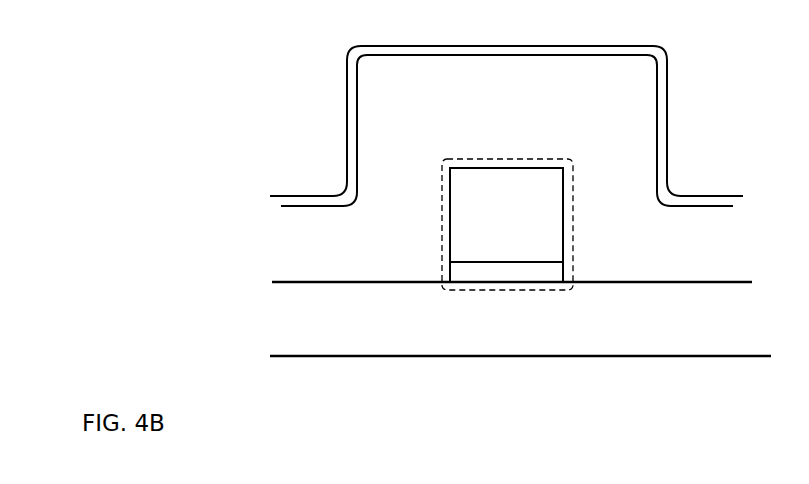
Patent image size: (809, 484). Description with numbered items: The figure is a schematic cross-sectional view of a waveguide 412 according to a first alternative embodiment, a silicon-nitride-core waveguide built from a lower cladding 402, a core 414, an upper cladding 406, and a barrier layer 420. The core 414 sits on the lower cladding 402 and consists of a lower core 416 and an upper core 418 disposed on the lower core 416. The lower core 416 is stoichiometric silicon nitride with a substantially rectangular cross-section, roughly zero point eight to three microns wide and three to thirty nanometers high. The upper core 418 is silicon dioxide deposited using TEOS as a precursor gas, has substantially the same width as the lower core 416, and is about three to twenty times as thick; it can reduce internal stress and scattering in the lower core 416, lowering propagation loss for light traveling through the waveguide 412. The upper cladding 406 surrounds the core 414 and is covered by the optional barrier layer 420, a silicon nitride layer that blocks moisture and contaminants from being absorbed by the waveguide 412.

The lower cladding 402 is at (347, 336).
The upper cladding 406 is at (347, 261).
The waveguide 412 is at (272, 91).
The core 414 is at (506, 159).
The lower core 416 is at (553, 271).
The upper core 418 is at (497, 243).
The barrier layer 420 is at (667, 130).